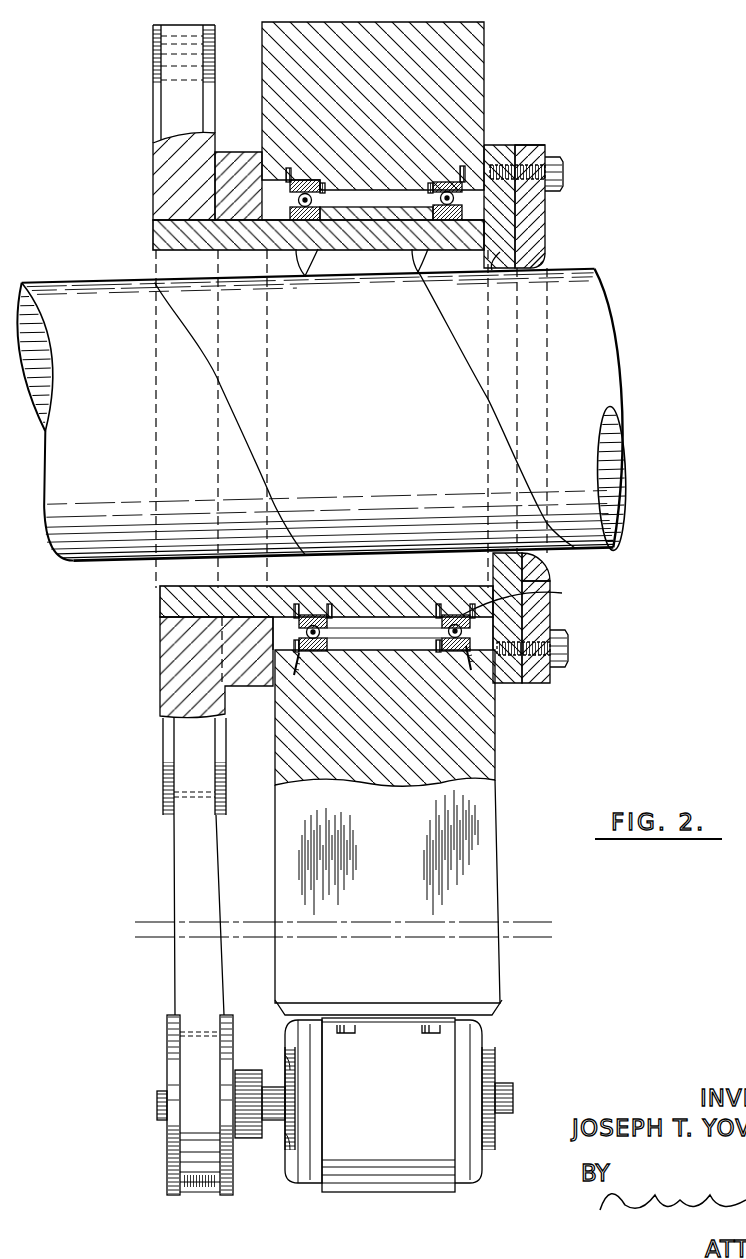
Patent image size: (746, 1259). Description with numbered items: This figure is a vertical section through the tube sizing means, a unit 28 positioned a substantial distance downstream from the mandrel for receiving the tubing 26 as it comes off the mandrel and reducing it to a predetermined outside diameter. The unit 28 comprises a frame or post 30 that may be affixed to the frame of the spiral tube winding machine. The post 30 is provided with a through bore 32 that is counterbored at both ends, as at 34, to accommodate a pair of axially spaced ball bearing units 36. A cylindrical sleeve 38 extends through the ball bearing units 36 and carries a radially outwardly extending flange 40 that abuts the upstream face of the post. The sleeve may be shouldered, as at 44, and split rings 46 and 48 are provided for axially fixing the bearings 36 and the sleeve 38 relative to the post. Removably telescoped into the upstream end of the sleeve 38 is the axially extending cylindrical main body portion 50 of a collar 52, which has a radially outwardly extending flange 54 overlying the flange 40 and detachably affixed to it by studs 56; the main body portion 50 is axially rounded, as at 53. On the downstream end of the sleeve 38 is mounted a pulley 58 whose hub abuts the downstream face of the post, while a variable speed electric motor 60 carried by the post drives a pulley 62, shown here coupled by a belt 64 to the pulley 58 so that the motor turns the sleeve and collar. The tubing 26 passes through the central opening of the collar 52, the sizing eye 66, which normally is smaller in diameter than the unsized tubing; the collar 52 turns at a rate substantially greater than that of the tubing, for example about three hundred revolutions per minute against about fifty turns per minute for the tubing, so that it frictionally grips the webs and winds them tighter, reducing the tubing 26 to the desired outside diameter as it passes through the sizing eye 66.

The tubing 26 is at (118, 560).
The unit or means 28 is at (118, 865).
The frame or post 30 is at (404, 750).
The through bore 32 is at (377, 640).
The counterbore 34 is at (276, 184).
The ball bearing units 36 is at (313, 615).
The cylindrical sleeve 38 is at (176, 601).
The radially outwardly extending flange 40 is at (512, 668).
The shoulder 44 is at (552, 593).
The split ring 46 is at (382, 672).
The split ring 48 is at (305, 277).
The cylindrical main body portion 50 is at (493, 272).
The collar 52 is at (590, 226).
The axially rounded portion 53 is at (542, 270).
The radially outwardly extending flange 54 is at (532, 236).
The studs 56 is at (563, 176).
The pulley 58 is at (176, 672).
The variable speed electric motor 60 is at (401, 1109).
The pulley 62 is at (190, 1070).
The belt 64 is at (175, 880).
The sizing eye 66 is at (502, 551).